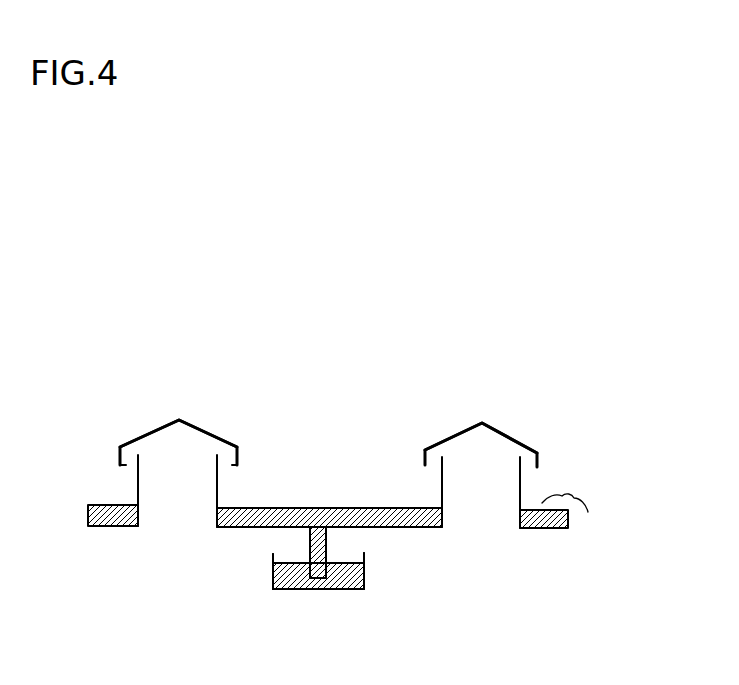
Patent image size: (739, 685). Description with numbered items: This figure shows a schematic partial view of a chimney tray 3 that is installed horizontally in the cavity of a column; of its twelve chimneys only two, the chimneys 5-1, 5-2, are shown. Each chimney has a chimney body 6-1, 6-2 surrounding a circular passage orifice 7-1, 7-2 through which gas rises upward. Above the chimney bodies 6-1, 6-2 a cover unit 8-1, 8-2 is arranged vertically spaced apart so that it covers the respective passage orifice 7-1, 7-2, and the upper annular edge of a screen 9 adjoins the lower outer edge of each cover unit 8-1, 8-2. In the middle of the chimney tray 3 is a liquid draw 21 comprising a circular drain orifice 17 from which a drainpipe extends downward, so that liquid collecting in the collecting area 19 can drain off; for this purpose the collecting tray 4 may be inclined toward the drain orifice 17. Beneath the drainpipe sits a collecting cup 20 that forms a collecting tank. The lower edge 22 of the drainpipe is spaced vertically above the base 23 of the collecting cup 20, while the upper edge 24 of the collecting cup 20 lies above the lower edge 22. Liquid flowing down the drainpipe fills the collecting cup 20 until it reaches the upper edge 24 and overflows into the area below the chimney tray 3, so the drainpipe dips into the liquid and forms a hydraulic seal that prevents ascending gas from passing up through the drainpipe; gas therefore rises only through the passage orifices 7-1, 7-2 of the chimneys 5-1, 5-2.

The chimney tray 3 is at (84, 523).
The collecting tray 4 is at (550, 530).
The chimney 5-1 is at (200, 420).
The chimney 5-2 is at (481, 420).
The chimney body 6-1 is at (138, 474).
The chimney body 6-2 is at (522, 483).
The passage orifice 7-1 is at (193, 528).
The passage orifice 7-2 is at (495, 531).
The cover unit 8-1 is at (158, 428).
The cover unit 8-2 is at (455, 435).
The screen 9 is at (425, 451).
The drain orifice 17 is at (330, 530).
The collecting area 19 is at (570, 519).
The collecting cup 20 is at (365, 577).
The liquid draw 21 is at (262, 586).
The lower edge of the drainpipe 22 is at (310, 580).
The base of the collecting cup 23 is at (332, 590).
The upper edge of the collecting cup 24 is at (273, 556).